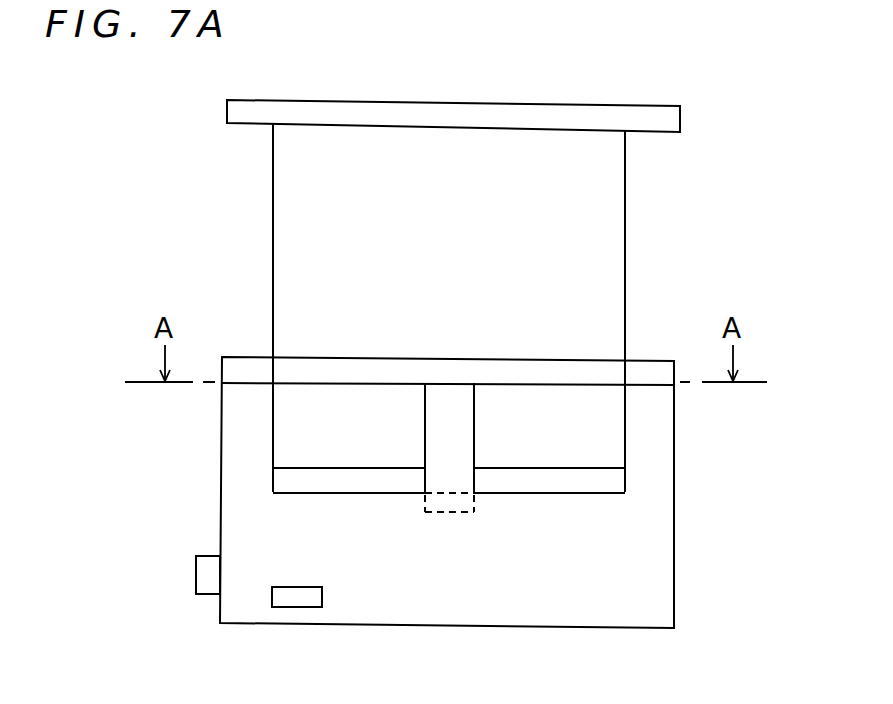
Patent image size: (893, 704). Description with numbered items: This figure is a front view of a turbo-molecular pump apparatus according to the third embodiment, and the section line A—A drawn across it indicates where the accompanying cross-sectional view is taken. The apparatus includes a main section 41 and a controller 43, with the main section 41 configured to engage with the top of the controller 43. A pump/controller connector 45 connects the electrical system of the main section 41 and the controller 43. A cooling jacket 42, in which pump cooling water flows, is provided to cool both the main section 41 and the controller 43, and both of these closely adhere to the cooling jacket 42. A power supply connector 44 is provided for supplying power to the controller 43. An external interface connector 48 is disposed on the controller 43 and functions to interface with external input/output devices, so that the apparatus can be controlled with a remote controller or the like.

The main section 41 is at (629, 223).
The cooling jacket 42 is at (615, 486).
The controller 43 is at (677, 574).
The power supply connector 44 is at (202, 584).
The pump/controller connector 45 is at (452, 511).
The external interface connector 48 is at (302, 599).